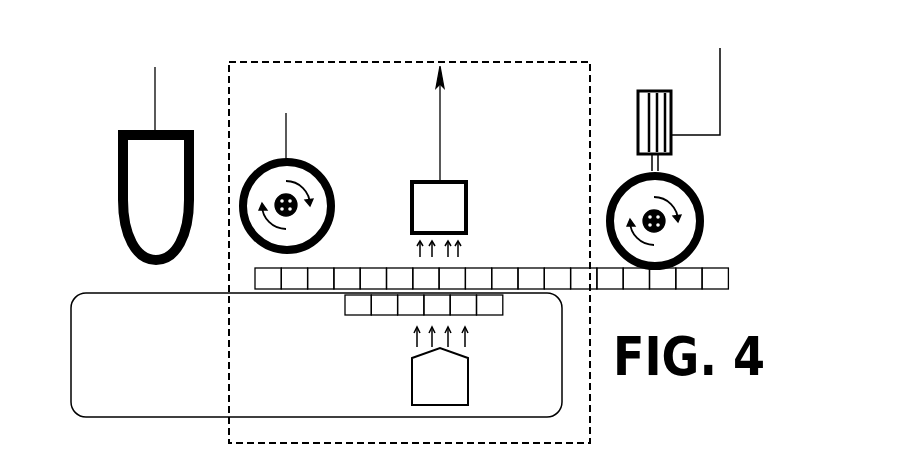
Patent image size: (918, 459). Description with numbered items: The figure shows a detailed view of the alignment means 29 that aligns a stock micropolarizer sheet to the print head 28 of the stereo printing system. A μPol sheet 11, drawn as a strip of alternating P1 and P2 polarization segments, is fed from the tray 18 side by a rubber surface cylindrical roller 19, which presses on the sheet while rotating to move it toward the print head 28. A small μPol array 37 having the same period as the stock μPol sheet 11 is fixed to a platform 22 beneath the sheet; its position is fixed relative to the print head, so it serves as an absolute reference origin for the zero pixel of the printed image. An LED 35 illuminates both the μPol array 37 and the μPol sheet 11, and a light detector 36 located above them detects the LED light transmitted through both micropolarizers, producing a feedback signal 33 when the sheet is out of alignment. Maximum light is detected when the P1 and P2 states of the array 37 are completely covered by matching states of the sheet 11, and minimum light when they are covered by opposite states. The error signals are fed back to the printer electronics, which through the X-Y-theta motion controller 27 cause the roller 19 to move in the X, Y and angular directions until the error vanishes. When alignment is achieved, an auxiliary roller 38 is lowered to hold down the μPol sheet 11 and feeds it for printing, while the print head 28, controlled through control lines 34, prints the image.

The μPol sheet 11 is at (650, 289).
The tray 18 is at (549, 0).
The rubber surface cylindrical roller 19 is at (706, 213).
The platform 22 is at (720, 95).
The X-Y-theta motion controller 27 is at (662, 90).
The print head 28 is at (171, 203).
The alignment means 29 is at (343, 62).
The feedback signal 33 is at (441, 122).
The control lines 34 is at (157, 98).
The LED 35 is at (457, 391).
The light detector 36 is at (455, 212).
The small μPol array 37 is at (372, 316).
The auxiliary roller 38 is at (315, 164).